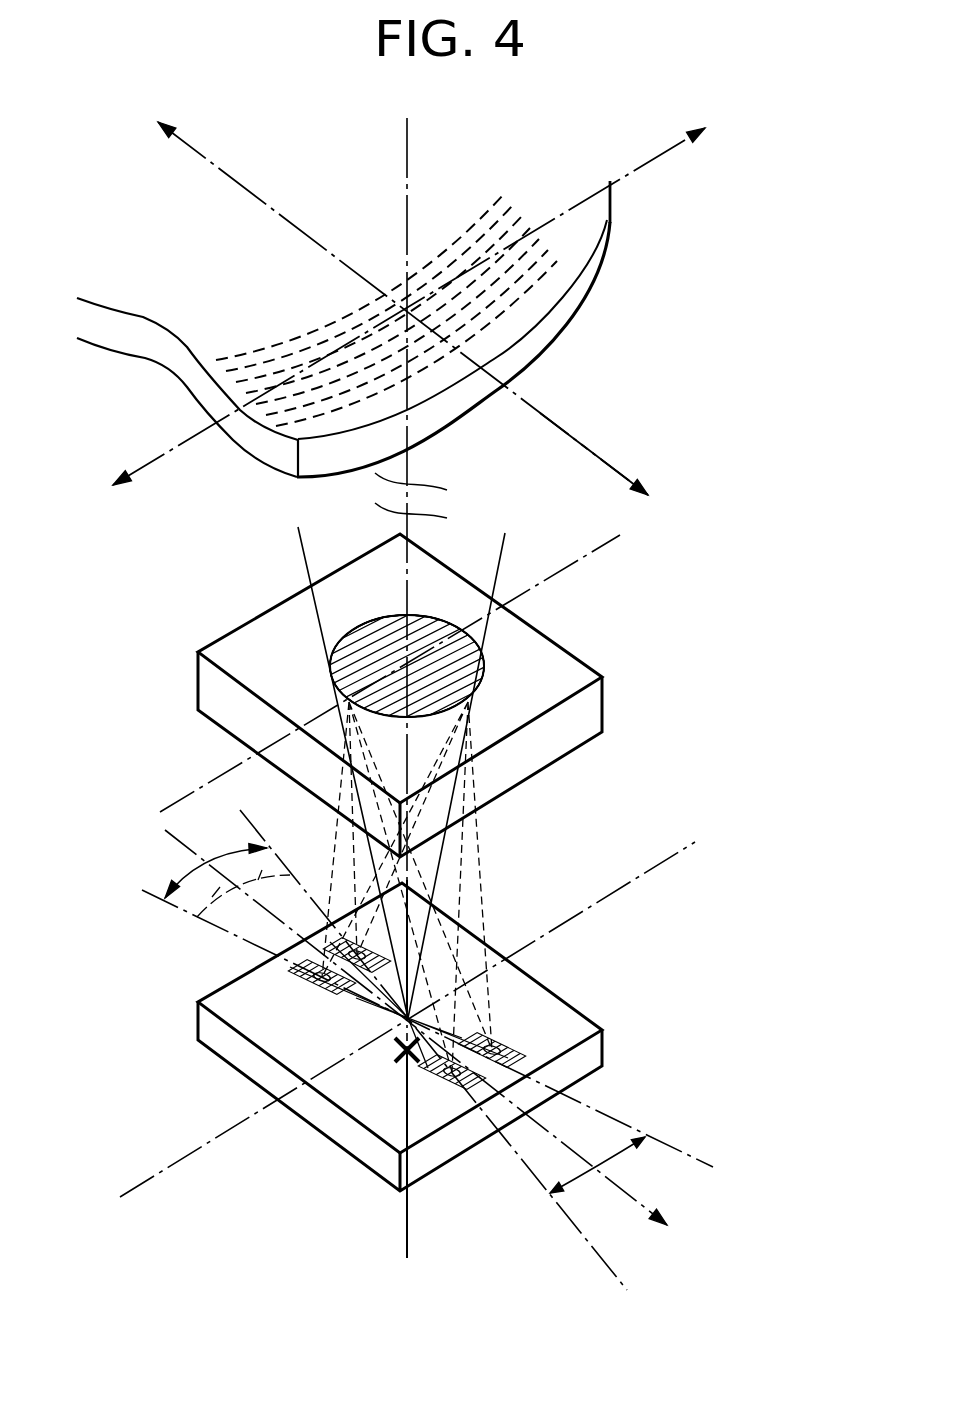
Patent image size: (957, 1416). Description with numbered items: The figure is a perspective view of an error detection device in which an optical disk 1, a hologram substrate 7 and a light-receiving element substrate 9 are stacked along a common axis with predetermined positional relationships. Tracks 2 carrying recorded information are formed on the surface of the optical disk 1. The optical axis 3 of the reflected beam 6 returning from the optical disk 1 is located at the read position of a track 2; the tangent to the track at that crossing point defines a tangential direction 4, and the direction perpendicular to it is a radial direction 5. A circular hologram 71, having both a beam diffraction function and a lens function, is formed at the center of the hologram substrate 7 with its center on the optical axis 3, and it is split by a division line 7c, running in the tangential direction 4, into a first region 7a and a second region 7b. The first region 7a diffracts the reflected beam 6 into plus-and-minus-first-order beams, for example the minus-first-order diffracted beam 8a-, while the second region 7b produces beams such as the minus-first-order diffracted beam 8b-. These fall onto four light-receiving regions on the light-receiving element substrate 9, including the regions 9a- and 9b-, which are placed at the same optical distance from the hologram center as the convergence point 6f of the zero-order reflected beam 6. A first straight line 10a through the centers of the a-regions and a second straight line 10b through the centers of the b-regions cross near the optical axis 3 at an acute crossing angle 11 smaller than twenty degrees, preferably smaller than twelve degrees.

The optical disk 1 is at (580, 297).
The tracks 2 is at (510, 203).
The optical axis 3 is at (405, 178).
The tangential direction 4 is at (650, 167).
The radial direction 5 is at (580, 437).
The reflected beam 6 is at (510, 557).
The convergence (focal) point 6f is at (425, 1022).
The hologram substrate 7 is at (580, 723).
The first region 7a is at (473, 637).
The second region 7b is at (345, 627).
The division line 7c is at (410, 662).
The hologram 71 is at (483, 663).
The -1-order diffracted beam 8a- is at (345, 890).
The -1-order diffracted beam 8b- is at (300, 922).
The light-receiving element substrate 9 is at (587, 1057).
The light-receiving region 9a- is at (398, 1035).
The light-receiving region 9b- is at (330, 988).
The first straight line 10a is at (605, 1255).
The second straight line 10b is at (700, 1158).
The crossing angle 11 is at (195, 875).